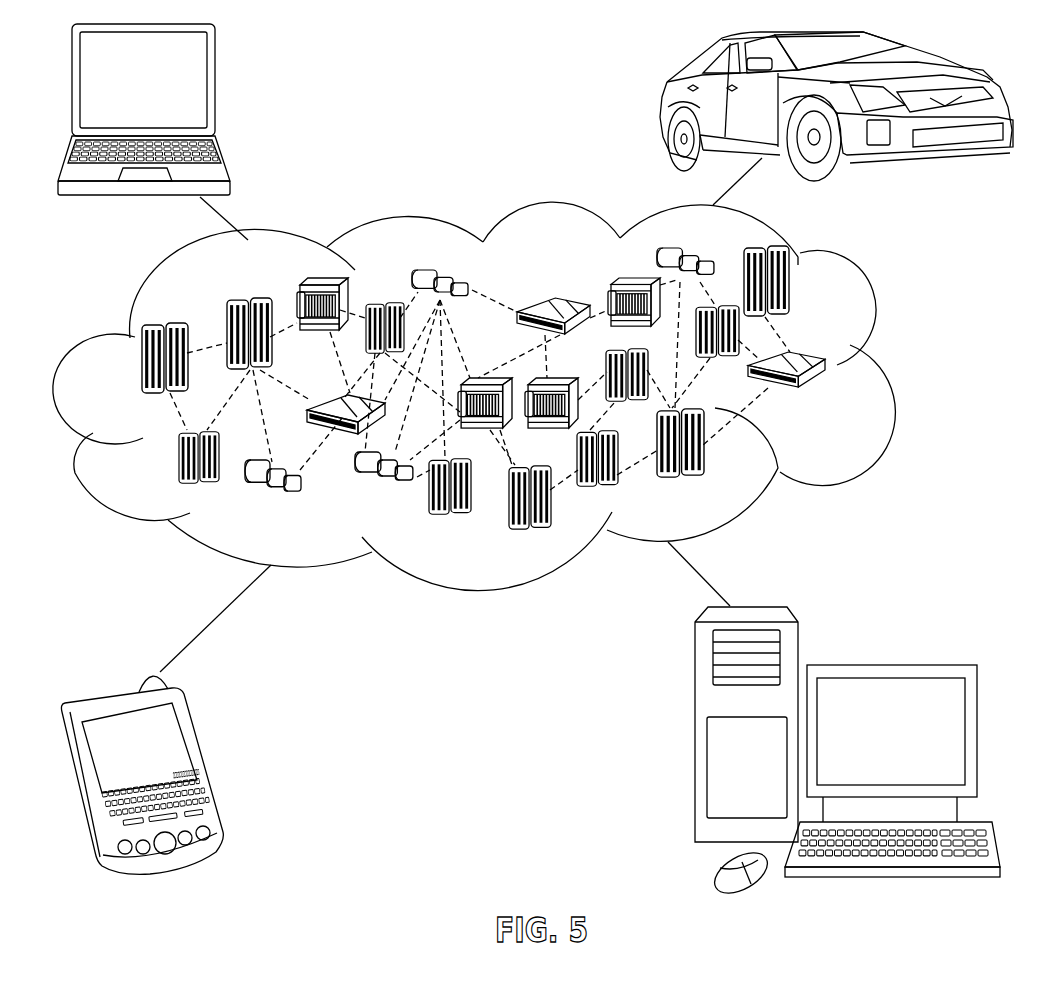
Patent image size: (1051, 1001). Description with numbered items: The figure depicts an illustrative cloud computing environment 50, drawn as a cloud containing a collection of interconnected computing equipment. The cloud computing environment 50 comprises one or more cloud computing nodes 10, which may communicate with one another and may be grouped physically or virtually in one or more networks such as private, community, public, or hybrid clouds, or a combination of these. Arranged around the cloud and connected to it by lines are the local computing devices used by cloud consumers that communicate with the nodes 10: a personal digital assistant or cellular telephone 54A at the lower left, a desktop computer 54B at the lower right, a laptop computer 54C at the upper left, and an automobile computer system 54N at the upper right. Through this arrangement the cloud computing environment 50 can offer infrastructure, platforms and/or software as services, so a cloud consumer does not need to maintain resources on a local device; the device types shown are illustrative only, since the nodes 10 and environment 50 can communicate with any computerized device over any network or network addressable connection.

The cloud computing node 10 is at (834, 400).
The cloud computing environment 50 is at (880, 368).
The personal digital assistant or cellular telephone 54A is at (205, 762).
The desktop computer 54B is at (887, 665).
The laptop computer 54C is at (215, 90).
The automobile computer system 54N is at (663, 100).